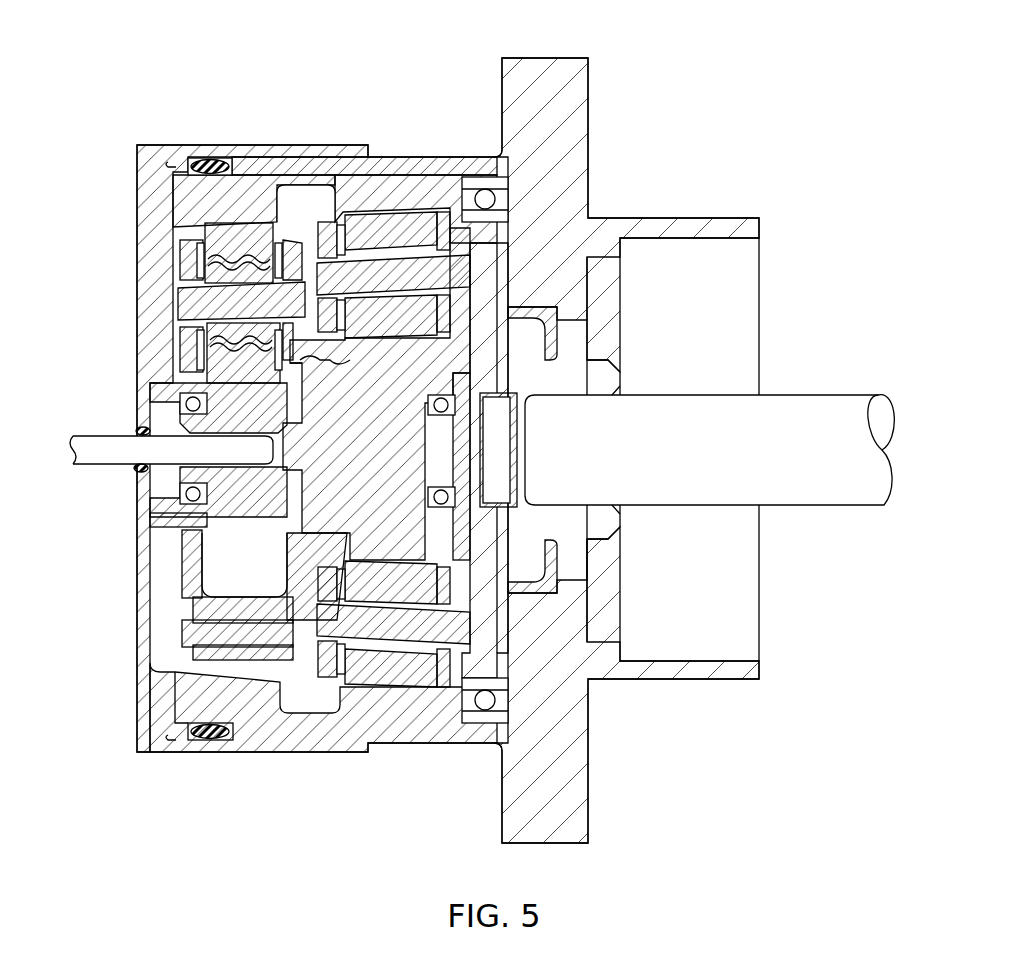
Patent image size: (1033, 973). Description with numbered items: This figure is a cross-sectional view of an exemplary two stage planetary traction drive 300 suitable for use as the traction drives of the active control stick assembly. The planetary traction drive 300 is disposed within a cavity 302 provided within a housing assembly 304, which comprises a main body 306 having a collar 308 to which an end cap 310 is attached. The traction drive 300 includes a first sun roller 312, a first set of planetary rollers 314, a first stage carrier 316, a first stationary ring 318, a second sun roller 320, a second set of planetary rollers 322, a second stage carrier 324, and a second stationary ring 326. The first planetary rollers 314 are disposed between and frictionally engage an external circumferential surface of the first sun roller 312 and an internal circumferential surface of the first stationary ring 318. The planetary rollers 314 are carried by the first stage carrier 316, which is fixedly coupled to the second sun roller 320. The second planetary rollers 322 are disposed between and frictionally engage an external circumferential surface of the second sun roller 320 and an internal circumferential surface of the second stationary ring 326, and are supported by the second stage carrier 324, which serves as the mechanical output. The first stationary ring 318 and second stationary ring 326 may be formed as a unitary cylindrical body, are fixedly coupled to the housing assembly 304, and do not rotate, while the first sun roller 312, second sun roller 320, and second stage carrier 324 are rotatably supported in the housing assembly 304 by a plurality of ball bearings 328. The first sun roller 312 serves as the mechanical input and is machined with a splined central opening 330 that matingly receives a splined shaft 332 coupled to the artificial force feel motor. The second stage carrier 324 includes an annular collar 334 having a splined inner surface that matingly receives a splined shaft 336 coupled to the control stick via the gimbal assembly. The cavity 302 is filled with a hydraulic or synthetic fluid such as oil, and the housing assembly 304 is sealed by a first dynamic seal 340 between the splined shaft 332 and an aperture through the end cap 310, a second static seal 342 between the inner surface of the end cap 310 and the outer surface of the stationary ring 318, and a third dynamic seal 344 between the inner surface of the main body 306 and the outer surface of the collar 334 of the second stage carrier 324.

The two stage planetary traction drive 300 is at (190, 199).
The cavity 302 is at (301, 717).
The housing assembly 304 is at (538, 600).
The main body 306 is at (544, 64).
The collar 308 is at (332, 159).
The end cap 310 is at (137, 206).
The first sun roller 312 is at (215, 502).
The first set of planetary rollers 314 is at (245, 238).
The first stage carrier 316 is at (222, 608).
The first stationary ring 318 is at (262, 182).
The second sun roller 320 is at (343, 461).
The second set of planetary rollers 322 is at (430, 212).
The second stage carrier 324 is at (398, 642).
The second stationary ring 326 is at (381, 181).
The ball bearings 328 is at (184, 404).
The splined central opening 330 is at (254, 470).
The splined shaft 332 is at (86, 462).
The annular collar 334 is at (614, 386).
The splined shaft 336 is at (683, 461).
The first dynamic seal 340 is at (132, 430).
The second static seal 342 is at (219, 740).
The third dynamic seal 344 is at (537, 310).